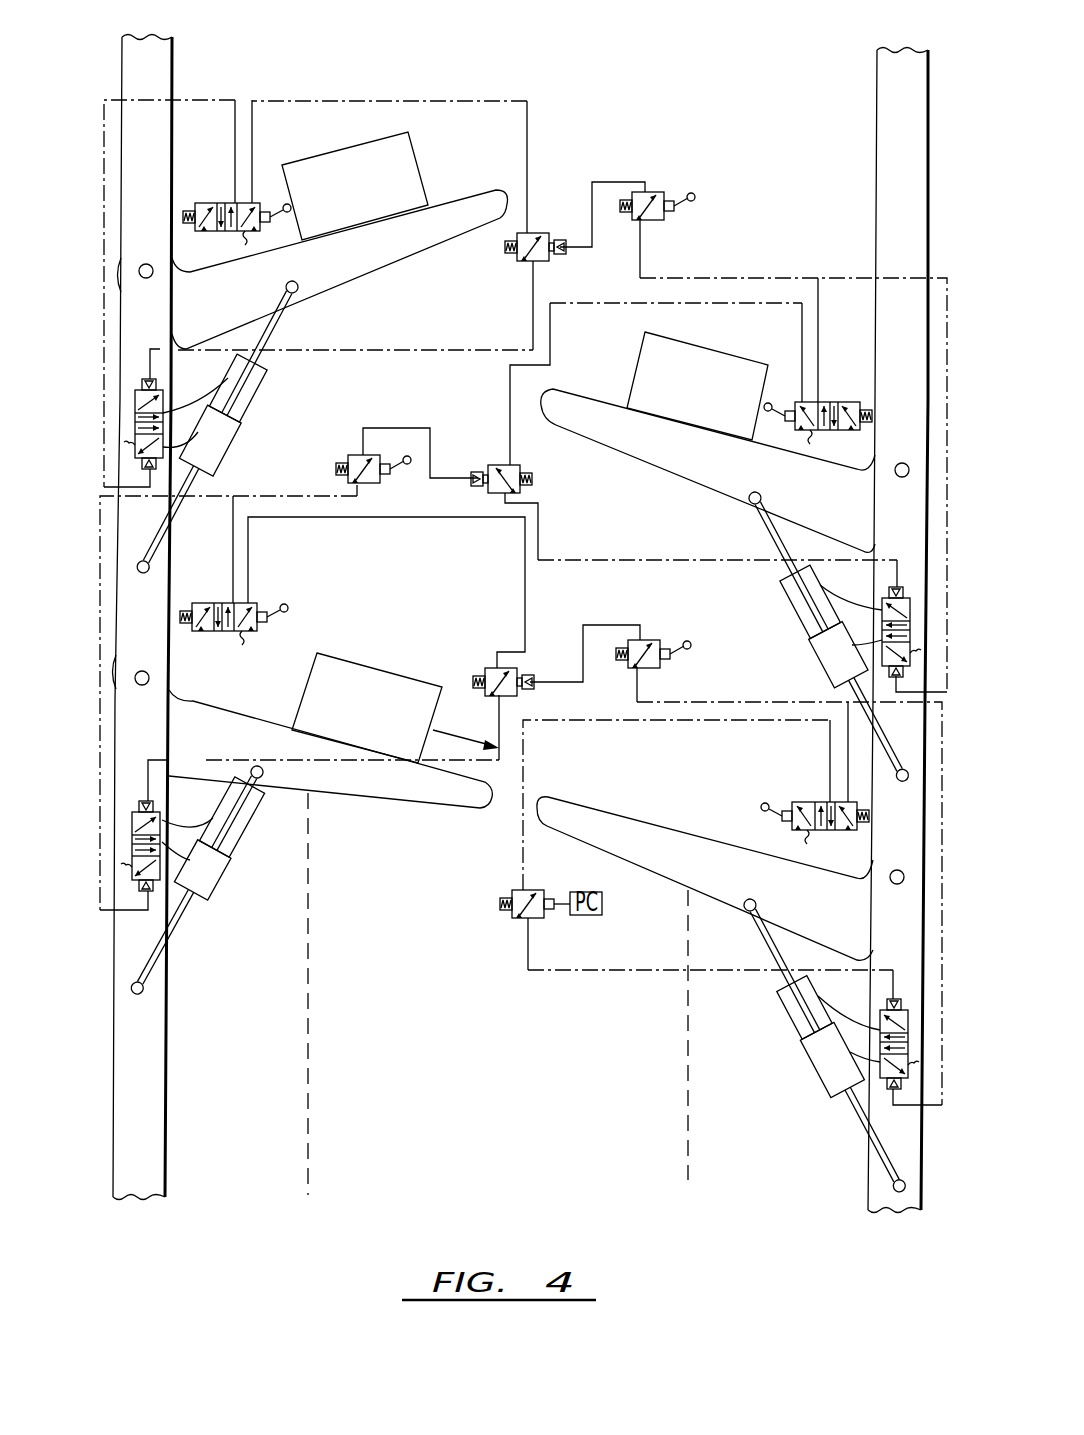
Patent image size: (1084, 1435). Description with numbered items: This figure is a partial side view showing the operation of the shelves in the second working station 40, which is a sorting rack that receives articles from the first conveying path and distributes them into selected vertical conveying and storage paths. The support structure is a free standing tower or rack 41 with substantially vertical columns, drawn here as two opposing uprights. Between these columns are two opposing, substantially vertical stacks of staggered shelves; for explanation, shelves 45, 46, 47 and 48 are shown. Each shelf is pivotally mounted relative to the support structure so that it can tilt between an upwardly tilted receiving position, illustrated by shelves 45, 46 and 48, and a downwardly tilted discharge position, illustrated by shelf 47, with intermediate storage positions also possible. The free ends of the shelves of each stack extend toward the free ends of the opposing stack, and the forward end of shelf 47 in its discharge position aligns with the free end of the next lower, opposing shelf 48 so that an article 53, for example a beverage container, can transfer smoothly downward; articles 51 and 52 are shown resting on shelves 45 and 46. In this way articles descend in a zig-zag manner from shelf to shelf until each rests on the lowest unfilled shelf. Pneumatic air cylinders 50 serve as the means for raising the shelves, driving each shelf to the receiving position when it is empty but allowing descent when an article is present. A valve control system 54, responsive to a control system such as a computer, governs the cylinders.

The second working station 40 is at (452, 954).
The rack 41 is at (170, 64).
The shelf 45 is at (392, 253).
The shelf 46 is at (658, 453).
The shelf 47 is at (357, 783).
The shelf 48 is at (680, 875).
The pneumatic air cylinder 50 is at (260, 390).
The article 51 is at (362, 203).
The article 52 is at (706, 394).
The article 53 is at (372, 718).
The valve control system 54 is at (615, 178).